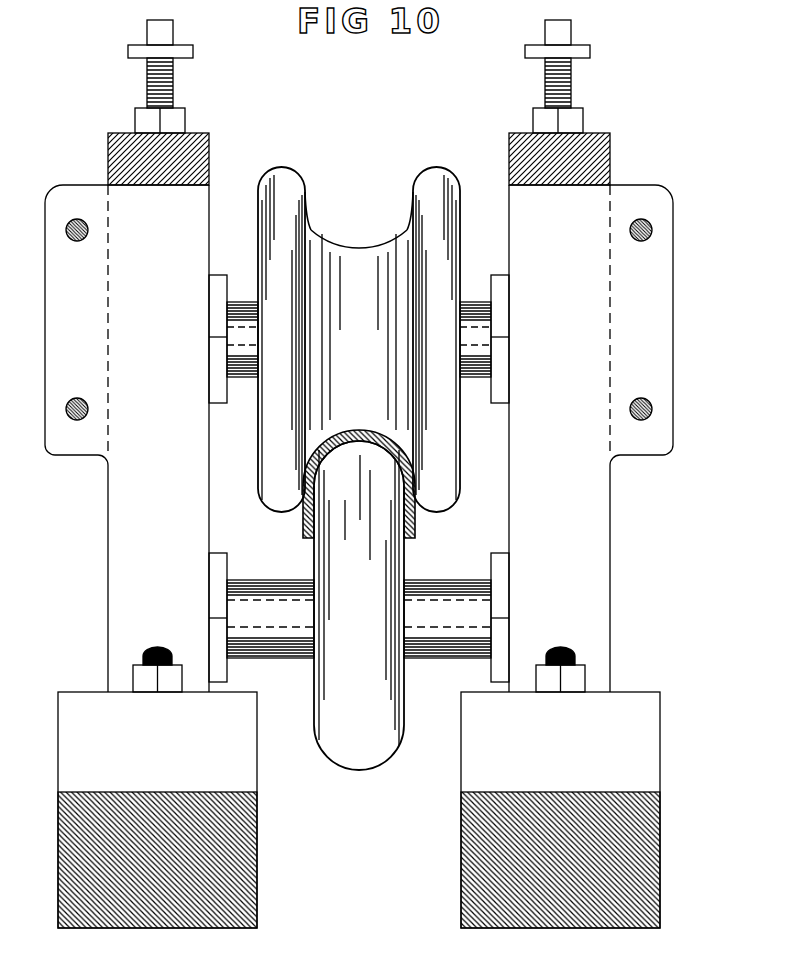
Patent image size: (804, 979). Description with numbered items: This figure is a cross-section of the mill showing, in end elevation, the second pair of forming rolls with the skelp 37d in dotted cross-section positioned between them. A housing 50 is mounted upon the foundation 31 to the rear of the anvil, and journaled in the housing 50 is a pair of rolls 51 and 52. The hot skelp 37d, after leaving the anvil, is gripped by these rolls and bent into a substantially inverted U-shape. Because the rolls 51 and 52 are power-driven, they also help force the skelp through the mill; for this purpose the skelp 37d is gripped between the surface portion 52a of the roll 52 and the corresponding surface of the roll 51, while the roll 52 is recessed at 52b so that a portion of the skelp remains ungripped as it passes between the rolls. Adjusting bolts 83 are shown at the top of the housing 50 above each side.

The foundation 31 is at (65, 848).
The skelp 37d is at (415, 531).
The housing 50 is at (120, 567).
The roll 51 is at (327, 702).
The roll 52 is at (359, 324).
The surface portion of the roll 52a is at (363, 257).
The recess of the roll 52b is at (405, 233).
The adjusting bolt 83 is at (147, 89).